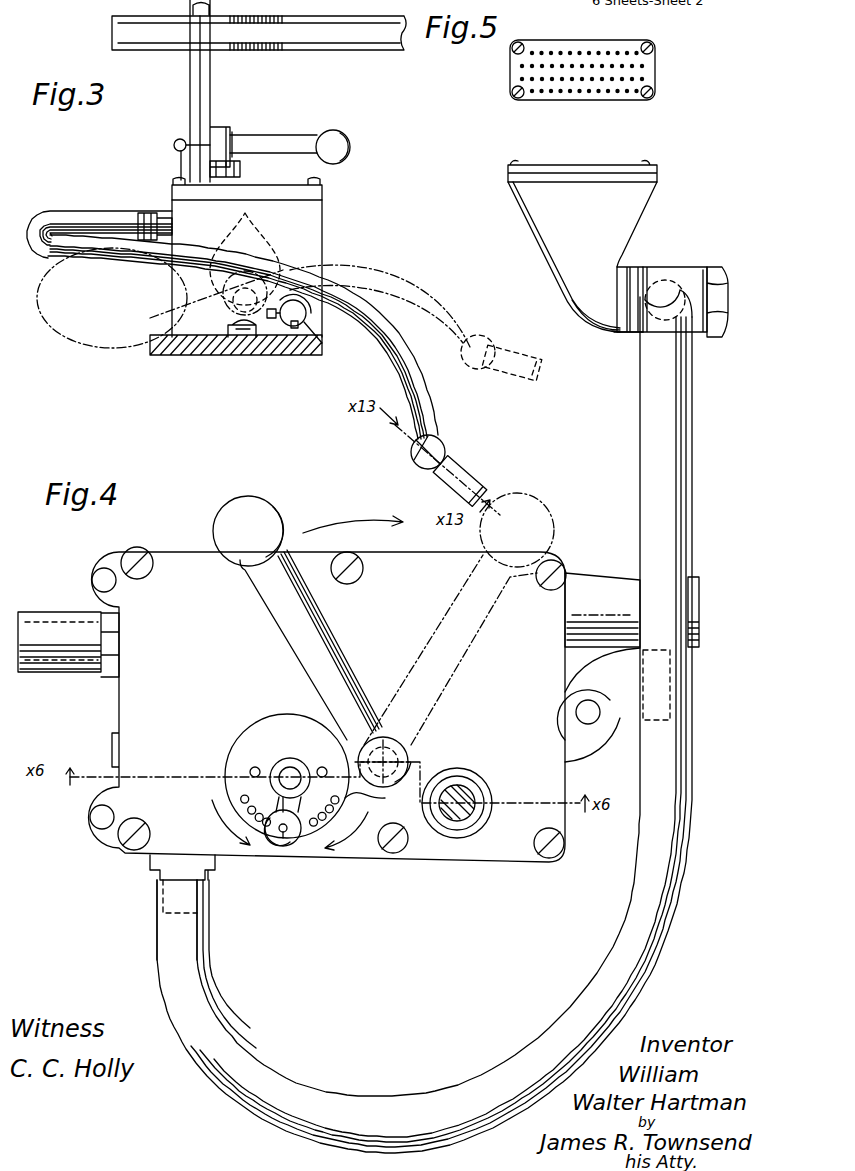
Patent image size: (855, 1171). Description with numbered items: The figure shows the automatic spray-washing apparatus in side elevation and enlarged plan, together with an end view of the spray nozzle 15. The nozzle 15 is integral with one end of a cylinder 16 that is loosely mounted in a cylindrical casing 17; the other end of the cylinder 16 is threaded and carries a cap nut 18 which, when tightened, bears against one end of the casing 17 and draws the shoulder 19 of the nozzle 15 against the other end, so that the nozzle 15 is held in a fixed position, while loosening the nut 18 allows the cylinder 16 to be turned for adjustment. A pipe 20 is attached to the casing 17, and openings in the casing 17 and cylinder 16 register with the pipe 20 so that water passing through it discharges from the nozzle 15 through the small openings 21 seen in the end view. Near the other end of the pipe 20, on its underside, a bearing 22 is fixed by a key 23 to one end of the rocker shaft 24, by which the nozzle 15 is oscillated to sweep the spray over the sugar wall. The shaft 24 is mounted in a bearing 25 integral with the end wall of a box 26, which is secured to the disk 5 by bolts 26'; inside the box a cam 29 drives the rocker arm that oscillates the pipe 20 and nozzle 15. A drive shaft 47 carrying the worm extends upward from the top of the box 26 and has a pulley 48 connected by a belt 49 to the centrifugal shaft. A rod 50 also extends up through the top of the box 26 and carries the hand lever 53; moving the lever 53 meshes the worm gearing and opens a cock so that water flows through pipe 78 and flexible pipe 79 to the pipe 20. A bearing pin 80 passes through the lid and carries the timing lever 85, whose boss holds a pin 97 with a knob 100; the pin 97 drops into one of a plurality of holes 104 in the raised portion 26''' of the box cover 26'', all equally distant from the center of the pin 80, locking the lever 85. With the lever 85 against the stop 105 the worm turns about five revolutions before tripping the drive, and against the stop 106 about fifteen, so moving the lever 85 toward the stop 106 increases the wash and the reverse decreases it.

In FIG. 3, the disk 5 is at (175, 357).
In FIG. 3, the spray nozzle 15 is at (462, 472).
In FIG. 4, the spray nozzle 15 is at (512, 206).
In FIG. 5, the spray nozzle 15 is at (620, 37).
In FIG. 4, the cylinder 16 is at (642, 276).
In FIG. 4, the casing 17 is at (676, 268).
In FIG. 3, the cap nut 18 is at (438, 445).
In FIG. 4, the cap nut 18 is at (720, 270).
In FIG. 4, the shoulder 19 is at (622, 334).
In FIG. 3, the pipe 20 is at (405, 268).
In FIG. 4, the pipe 20 is at (694, 411).
In FIG. 5, the small openings 21 is at (588, 51).
In FIG. 3, the bearing 22 is at (326, 339).
In FIG. 4, the bearing 22 is at (698, 580).
In FIG. 3, the key 23 is at (294, 330).
In FIG. 3, the rocker shaft 24 is at (277, 326).
In FIG. 4, the bearing 25 is at (598, 575).
In FIG. 3, the box 26 is at (266, 268).
In FIG. 3, the bolts 26' is at (228, 352).
In FIG. 3, the box cover 26'' is at (273, 191).
In FIG. 4, the box cover 26'' is at (328, 685).
In FIG. 4, the raised portion 26''' is at (289, 777).
In FIG. 3, the cam 29 is at (270, 242).
In FIG. 3, the drive shaft 47 is at (208, 103).
In FIG. 4, the drive shaft 47 is at (463, 778).
In FIG. 3, the pulley 48 is at (270, 52).
In FIG. 3, the belt 49 is at (350, 40).
In FIG. 3, the rod 50 is at (241, 170).
In FIG. 4, the rod 50 is at (408, 756).
In FIG. 3, the hand lever 53 is at (282, 138).
In FIG. 4, the hand lever 53 is at (440, 622).
In FIG. 3, the pipe 78 is at (170, 205).
In FIG. 4, the pipe 78 is at (65, 672).
In FIG. 3, the flexible pipe 79 is at (62, 212).
In FIG. 4, the flexible pipe 79 is at (213, 993).
In FIG. 4, the bearing pin 80 is at (290, 758).
In FIG. 4, the timing lever 85 is at (271, 796).
In FIG. 4, the pin 97 is at (281, 846).
In FIG. 3, the knob 100 is at (174, 145).
In FIG. 4, the knob 100 is at (288, 845).
In FIG. 4, the holes 104 is at (240, 796).
In FIG. 4, the stop 105 is at (322, 767).
In FIG. 4, the stop 106 is at (255, 767).